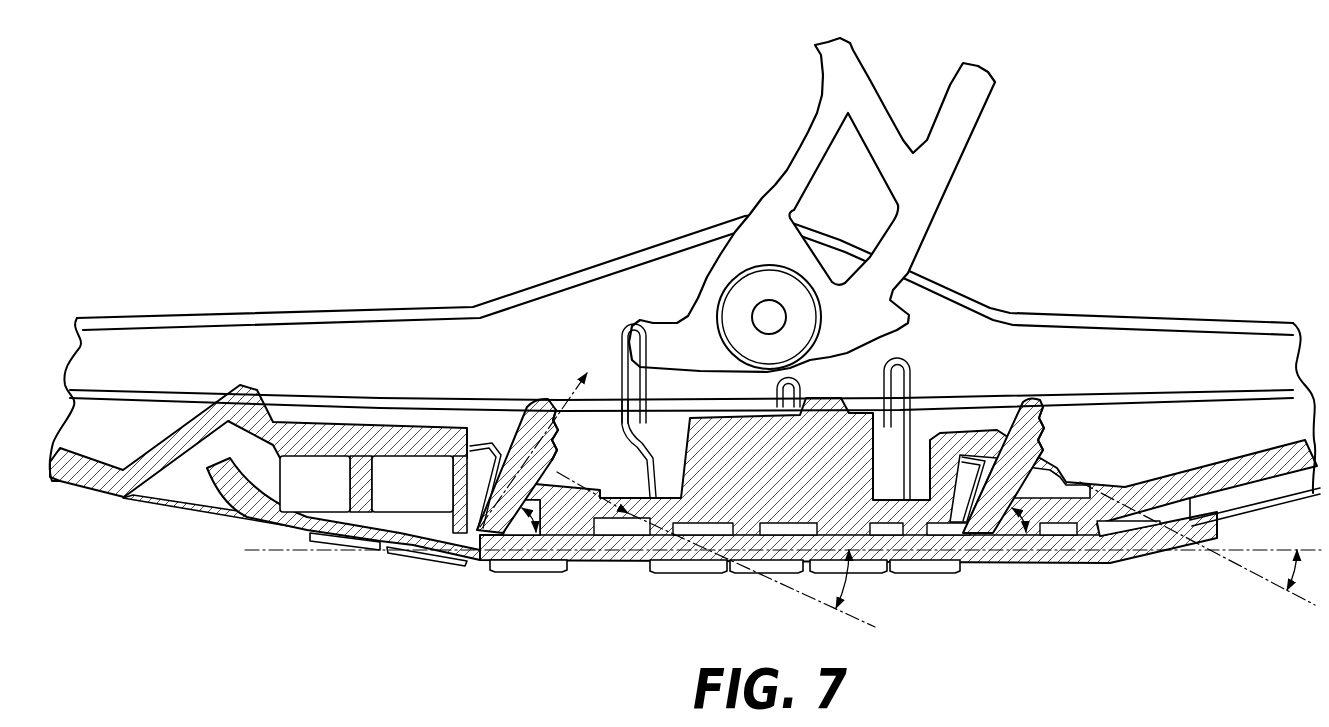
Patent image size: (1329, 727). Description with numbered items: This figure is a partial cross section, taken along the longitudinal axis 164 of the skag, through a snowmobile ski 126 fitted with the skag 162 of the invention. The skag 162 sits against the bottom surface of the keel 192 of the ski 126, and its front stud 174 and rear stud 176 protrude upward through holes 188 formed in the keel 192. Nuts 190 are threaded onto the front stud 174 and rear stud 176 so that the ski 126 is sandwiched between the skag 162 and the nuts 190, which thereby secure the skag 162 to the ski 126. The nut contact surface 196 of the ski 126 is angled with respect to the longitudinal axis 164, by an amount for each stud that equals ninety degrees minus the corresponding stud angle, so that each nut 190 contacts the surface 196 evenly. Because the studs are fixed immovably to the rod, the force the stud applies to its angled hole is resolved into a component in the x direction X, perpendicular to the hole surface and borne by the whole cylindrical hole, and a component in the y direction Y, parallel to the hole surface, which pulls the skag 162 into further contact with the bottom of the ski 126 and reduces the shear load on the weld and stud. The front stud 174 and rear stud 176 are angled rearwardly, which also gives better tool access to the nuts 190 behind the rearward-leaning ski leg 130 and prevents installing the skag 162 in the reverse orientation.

The ski 126 is at (614, 300).
The ski leg 130 is at (942, 182).
The skag 162 is at (912, 556).
The longitudinal axis 164 is at (302, 551).
The front stud 174 is at (503, 518).
The rear stud 176 is at (987, 518).
The holes 188 is at (453, 481).
The nuts 190 is at (525, 410).
The keel 192 is at (594, 514).
The nut contact surface 196 is at (491, 432).
The x direction X is at (564, 468).
The y direction Y is at (586, 388).